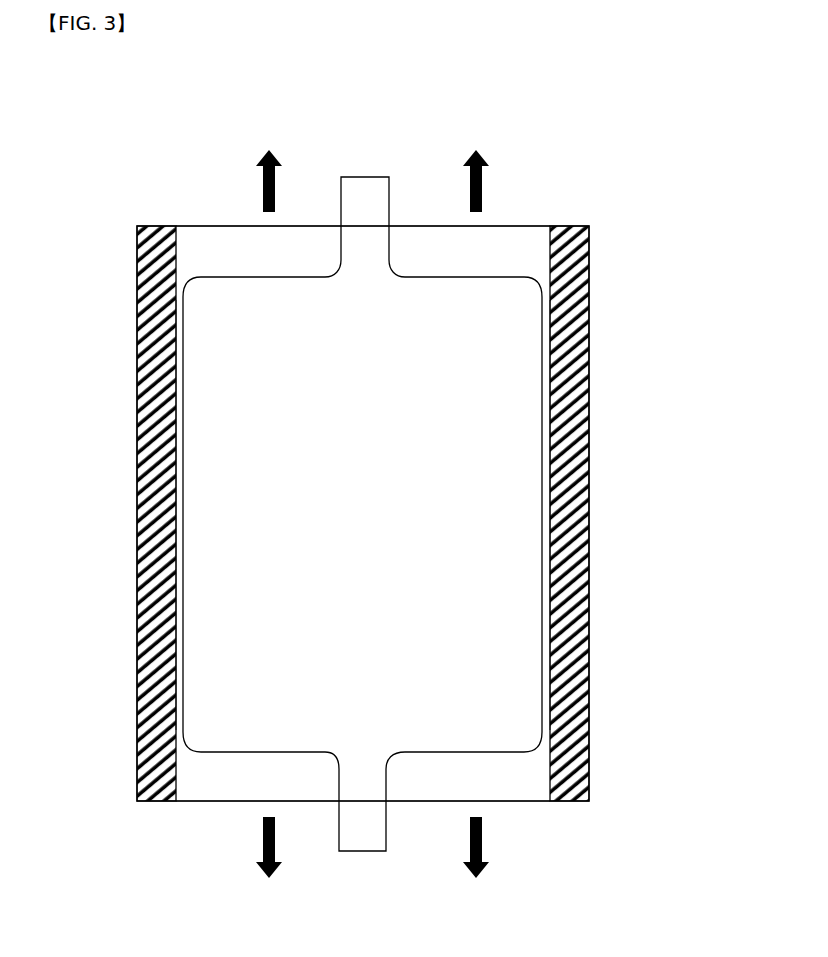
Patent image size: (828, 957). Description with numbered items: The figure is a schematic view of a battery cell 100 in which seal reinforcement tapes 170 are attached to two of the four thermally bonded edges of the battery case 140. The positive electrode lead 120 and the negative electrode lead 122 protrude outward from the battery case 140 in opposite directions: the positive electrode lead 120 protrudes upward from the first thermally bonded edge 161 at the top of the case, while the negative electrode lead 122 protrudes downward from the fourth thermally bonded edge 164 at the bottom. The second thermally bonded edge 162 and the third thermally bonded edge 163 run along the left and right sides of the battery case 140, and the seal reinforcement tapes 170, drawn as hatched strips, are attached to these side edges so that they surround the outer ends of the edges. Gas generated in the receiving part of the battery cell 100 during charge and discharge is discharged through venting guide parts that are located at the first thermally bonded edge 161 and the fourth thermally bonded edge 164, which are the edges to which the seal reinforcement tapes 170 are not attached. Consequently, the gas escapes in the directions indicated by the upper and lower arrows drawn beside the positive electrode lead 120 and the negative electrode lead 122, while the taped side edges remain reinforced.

The battery cell 100 is at (106, 135).
The positive electrode lead 120 is at (341, 176).
The negative electrode lead 122 is at (340, 852).
The battery case 140 is at (571, 224).
The first thermally bonded edge 161 is at (208, 250).
The second thermally bonded edge 162 is at (183, 632).
The third thermally bonded edge 163 is at (545, 632).
The fourth thermally bonded edge 164 is at (211, 793).
The seal reinforcement tape 170 is at (150, 526).